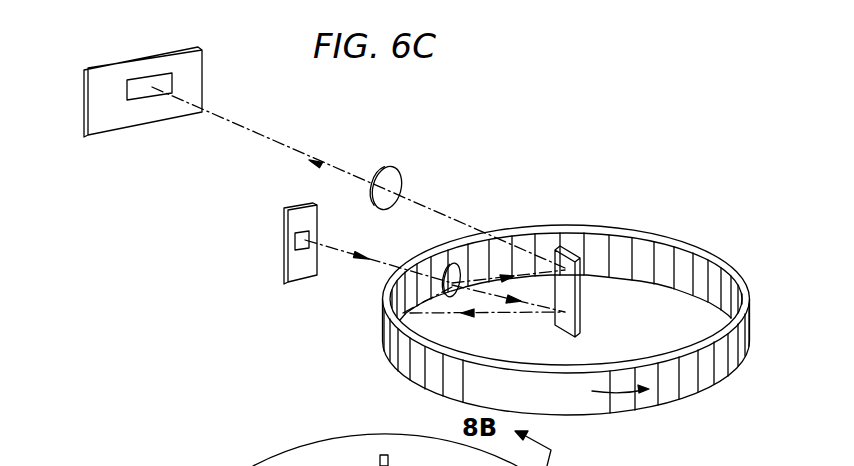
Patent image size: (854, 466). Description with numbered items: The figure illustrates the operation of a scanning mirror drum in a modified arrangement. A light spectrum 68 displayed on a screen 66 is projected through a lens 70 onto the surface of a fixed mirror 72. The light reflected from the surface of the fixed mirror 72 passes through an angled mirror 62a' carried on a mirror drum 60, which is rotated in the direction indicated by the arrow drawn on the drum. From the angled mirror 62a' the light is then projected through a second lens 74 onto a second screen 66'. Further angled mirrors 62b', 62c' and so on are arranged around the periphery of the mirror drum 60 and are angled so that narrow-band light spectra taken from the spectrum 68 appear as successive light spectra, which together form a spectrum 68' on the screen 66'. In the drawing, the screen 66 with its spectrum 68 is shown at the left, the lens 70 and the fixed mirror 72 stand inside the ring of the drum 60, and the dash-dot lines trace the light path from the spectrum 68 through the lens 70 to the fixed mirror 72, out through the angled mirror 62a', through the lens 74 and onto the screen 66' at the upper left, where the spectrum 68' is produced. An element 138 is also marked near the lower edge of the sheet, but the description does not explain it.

The screen 66' is at (178, 92).
The light spectrum 68' is at (149, 51).
The screen 66 is at (287, 224).
The light spectrum 68 is at (265, 255).
The lens 74 is at (398, 171).
The lens 70 is at (450, 266).
The fixed mirror 72 is at (582, 305).
The angled mirror 62a' is at (641, 235).
The angled mirror 62b' is at (675, 244).
The angled mirror 62c' is at (703, 255).
The mirror drum 60 is at (670, 393).
The detector 138 is at (388, 460).